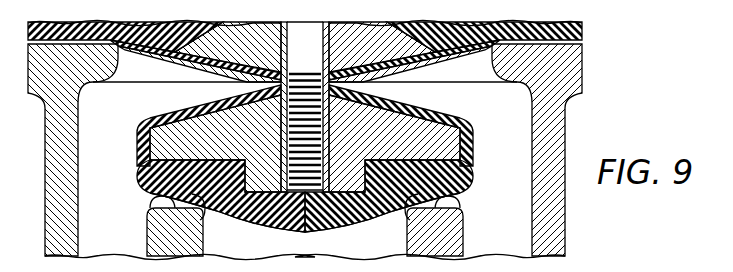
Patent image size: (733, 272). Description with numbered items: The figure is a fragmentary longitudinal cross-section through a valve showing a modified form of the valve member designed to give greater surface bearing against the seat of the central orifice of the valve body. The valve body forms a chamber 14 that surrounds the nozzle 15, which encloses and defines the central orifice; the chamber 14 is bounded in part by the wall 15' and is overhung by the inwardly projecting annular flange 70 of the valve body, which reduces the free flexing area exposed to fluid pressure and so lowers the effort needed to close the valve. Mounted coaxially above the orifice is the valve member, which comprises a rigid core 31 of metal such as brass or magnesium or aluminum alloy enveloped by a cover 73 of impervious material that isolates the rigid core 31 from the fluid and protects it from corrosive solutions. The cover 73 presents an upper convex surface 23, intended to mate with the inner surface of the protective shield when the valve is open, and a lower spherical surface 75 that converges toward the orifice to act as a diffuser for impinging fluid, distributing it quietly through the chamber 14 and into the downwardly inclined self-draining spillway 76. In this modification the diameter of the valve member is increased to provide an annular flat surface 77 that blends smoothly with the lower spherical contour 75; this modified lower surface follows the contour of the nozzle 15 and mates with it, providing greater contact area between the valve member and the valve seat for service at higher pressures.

The chamber 14 is at (305, 110).
The nozzle 15 is at (305, 232).
The wall 15' is at (305, 150).
The upper convex surface 23 is at (452, 110).
The rigid core 31 is at (305, 143).
The annular flange 70 is at (118, 70).
The cover 73 is at (305, 196).
The lower spherical surface 75 is at (326, 230).
The spillway 76 is at (305, 242).
The annular flat surface 77 is at (148, 209).